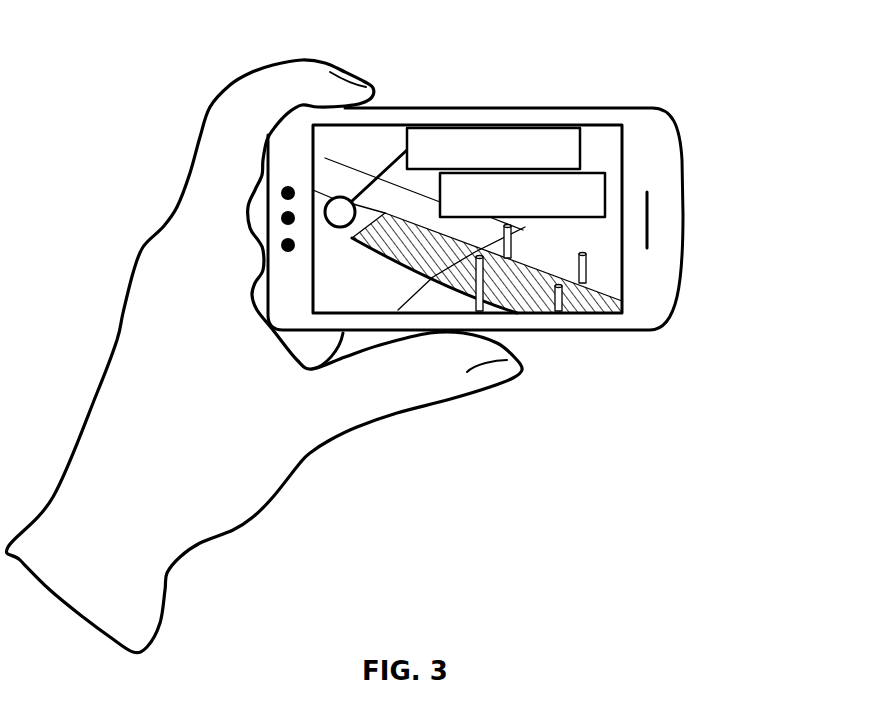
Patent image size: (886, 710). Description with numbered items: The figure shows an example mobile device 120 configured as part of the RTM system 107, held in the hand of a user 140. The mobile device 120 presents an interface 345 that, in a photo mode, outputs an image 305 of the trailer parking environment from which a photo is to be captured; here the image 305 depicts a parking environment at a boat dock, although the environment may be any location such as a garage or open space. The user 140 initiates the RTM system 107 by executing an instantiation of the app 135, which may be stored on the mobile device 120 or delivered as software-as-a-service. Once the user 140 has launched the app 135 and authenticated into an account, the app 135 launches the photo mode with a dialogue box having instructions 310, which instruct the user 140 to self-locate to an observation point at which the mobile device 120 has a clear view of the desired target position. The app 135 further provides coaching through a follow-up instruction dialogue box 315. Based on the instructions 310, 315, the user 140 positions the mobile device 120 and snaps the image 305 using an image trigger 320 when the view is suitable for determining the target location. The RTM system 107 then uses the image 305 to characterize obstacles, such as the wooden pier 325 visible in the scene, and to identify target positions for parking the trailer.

The RTM system 107 is at (790, 89).
The mobile device 120 is at (682, 203).
The app 135 is at (512, 93).
The user 140 is at (97, 393).
The image 305 is at (546, 177).
The dialogue box having instructions 310 is at (583, 133).
The follow-up instruction dialogue box 315 is at (583, 140).
The image trigger 320 is at (345, 198).
The wooden pier 325 is at (603, 297).
The interface 345 is at (585, 168).